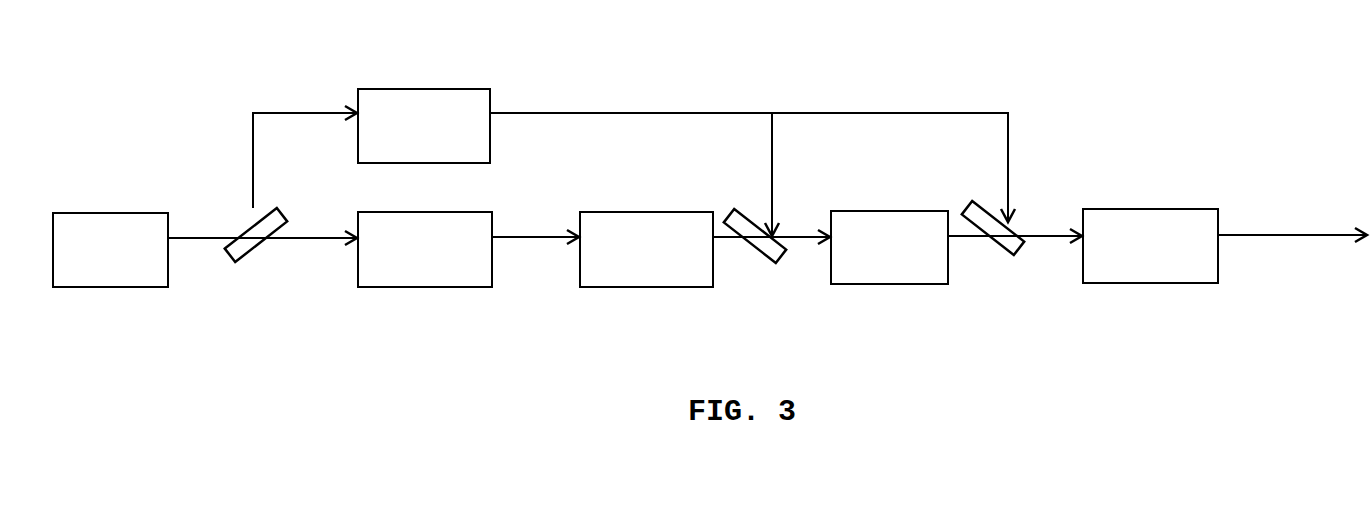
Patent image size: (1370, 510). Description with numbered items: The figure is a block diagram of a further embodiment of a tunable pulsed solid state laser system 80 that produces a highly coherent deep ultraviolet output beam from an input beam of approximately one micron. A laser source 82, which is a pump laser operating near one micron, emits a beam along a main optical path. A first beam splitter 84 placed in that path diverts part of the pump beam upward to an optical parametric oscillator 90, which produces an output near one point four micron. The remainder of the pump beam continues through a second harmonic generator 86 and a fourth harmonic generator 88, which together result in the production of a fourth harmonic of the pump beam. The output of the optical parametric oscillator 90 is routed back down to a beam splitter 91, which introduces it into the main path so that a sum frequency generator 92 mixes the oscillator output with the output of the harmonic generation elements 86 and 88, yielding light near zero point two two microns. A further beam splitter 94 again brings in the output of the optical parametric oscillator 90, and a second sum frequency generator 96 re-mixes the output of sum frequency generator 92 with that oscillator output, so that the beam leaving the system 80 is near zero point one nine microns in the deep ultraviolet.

The laser system 80 is at (814, 71).
The laser source 82 is at (92, 298).
The beam splitter 84 is at (260, 255).
The second harmonic generator 86 is at (438, 295).
The fourth harmonic generator 88 is at (635, 295).
The optical parametric oscillator 90 is at (465, 80).
The beam splitter 91 is at (763, 260).
The sum frequency generator 92 is at (893, 292).
The beam splitter 94 is at (995, 248).
The sum frequency generator 96 is at (1157, 295).